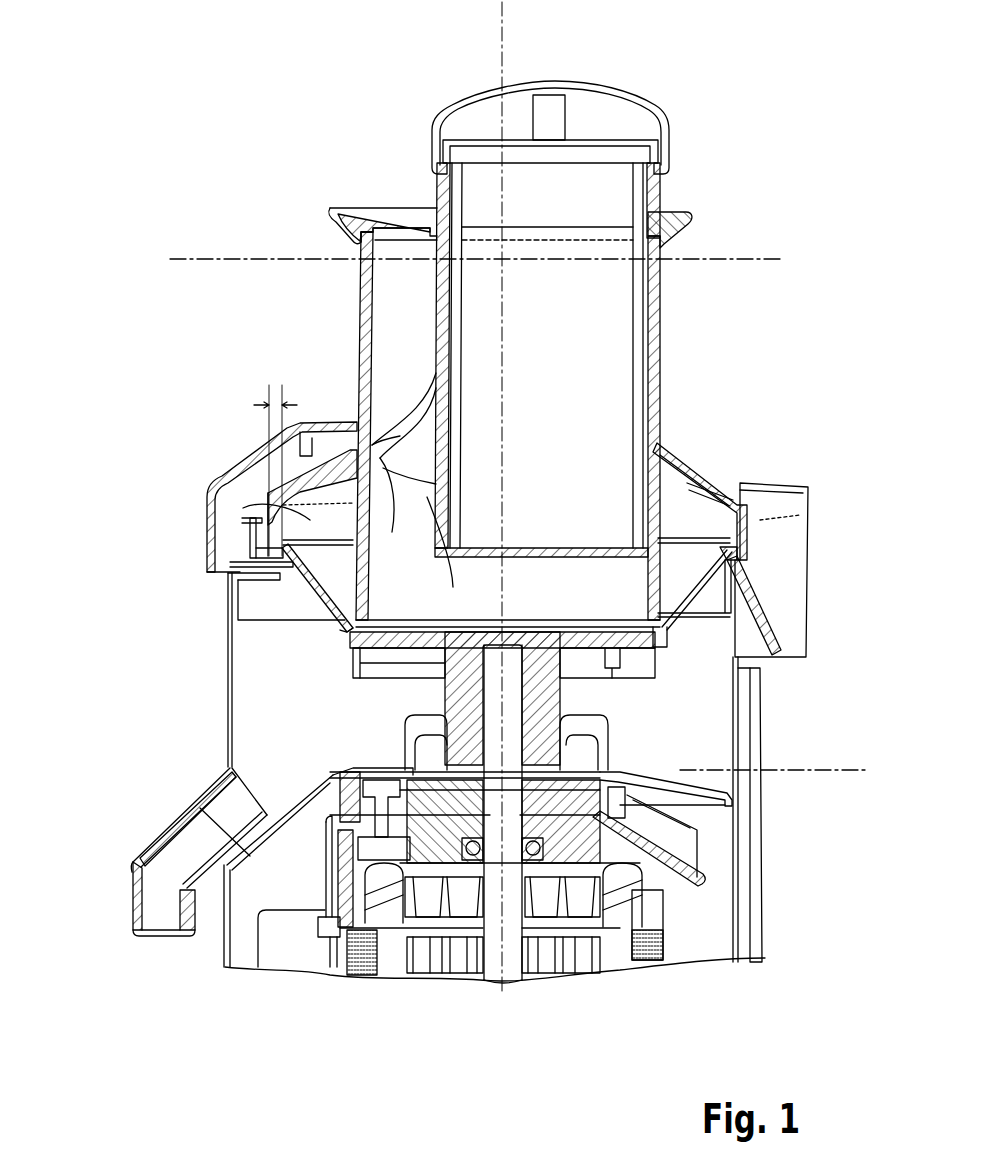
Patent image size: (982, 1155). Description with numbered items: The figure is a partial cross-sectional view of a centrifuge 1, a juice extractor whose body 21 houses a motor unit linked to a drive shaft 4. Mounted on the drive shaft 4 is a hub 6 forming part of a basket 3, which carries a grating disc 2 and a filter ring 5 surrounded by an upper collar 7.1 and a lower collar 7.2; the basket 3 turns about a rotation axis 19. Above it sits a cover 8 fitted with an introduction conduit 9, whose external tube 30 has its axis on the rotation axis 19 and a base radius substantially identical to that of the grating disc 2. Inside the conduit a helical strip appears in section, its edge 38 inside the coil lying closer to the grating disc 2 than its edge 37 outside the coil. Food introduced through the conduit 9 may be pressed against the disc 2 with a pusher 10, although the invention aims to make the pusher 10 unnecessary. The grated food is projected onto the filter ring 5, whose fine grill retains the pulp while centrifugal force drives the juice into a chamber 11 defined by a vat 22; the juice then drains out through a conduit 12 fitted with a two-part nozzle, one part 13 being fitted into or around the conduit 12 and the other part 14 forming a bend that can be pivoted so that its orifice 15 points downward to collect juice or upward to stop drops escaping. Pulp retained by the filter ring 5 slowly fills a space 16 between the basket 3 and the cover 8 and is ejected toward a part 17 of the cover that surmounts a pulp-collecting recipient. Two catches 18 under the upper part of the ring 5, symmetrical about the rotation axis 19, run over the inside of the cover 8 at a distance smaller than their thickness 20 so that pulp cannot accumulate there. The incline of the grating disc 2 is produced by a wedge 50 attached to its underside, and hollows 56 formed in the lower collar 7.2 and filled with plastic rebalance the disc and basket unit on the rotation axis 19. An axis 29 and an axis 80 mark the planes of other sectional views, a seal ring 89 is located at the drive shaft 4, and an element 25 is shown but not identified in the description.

The centrifuge 1 is at (212, 435).
The grating disc 2 is at (348, 628).
The basket 3 is at (350, 665).
The drive shaft 4 is at (590, 738).
The filter ring 5 is at (673, 603).
The hub 6 is at (438, 762).
The upper collar 7.1 is at (310, 525).
The lower collar 7.2 is at (345, 658).
The cover 8 is at (688, 450).
The conduit 9 is at (660, 300).
The pusher 10 is at (615, 93).
The chamber 11 is at (262, 728).
The conduit 12 is at (218, 803).
The part of nozzle 13 is at (152, 848).
The part of nozzle 14 is at (130, 897).
The orifice 15 is at (160, 940).
The space 16 is at (315, 487).
The part of cover 17 is at (770, 548).
The catches 18 is at (322, 455).
The rotation axis 19 is at (505, 38).
The thickness 20 is at (262, 405).
The body 21 is at (222, 930).
The vat 22 is at (228, 675).
The lid 25 is at (207, 497).
The axis 29 is at (778, 258).
The external tube 30 is at (350, 302).
The edge of strip 37 is at (392, 534).
The edge of strip 38 is at (453, 588).
The wedge 50 is at (585, 672).
The hollows 56 is at (385, 672).
The axis 80 is at (845, 770).
The seal ring 89 is at (560, 788).